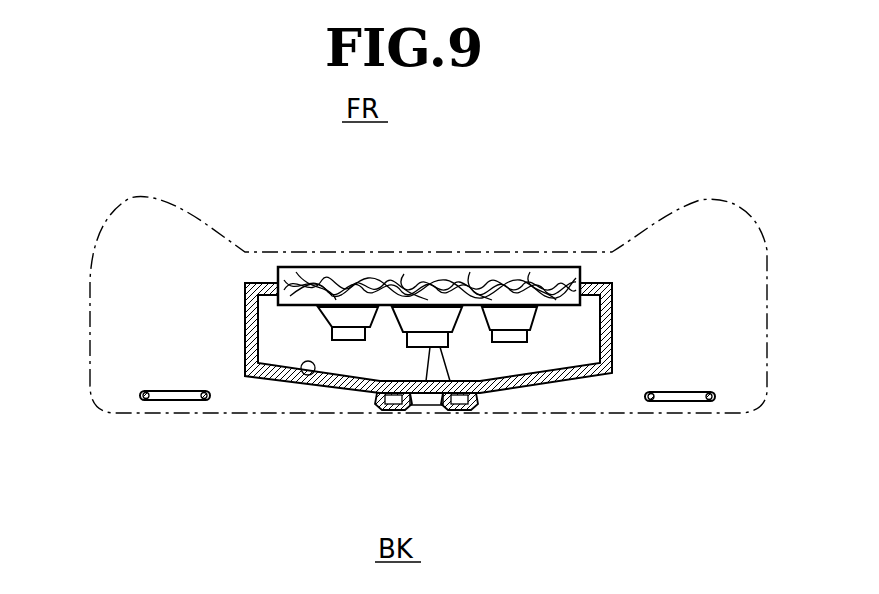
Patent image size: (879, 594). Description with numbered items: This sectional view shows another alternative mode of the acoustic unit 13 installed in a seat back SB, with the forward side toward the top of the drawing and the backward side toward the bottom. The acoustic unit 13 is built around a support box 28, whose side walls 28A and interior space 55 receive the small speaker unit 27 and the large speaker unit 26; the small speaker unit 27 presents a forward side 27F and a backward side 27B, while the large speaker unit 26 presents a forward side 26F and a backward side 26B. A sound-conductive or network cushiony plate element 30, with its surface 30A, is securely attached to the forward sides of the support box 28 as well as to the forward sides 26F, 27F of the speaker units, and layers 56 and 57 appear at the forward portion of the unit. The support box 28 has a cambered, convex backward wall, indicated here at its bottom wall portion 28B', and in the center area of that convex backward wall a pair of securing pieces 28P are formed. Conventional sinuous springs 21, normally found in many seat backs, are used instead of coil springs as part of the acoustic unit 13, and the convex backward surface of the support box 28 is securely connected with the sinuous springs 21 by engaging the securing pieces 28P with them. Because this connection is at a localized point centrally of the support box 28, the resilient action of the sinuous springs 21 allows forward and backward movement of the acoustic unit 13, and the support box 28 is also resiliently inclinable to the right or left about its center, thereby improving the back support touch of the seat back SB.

The seat back SB is at (118, 212).
The acoustic unit 13 is at (508, 228).
The adhesive / filler layer 56 is at (268, 283).
The network cushiony plate element 30 is at (429, 236).
The layer surface 30A is at (348, 276).
The forward side of the small speaker unit 27F is at (370, 307).
The forward side of the large speaker unit 26F is at (445, 307).
The sealing member 57 is at (558, 275).
The support box 28 is at (232, 302).
The small speaker unit 27 is at (318, 318).
The side wall of holder 28A is at (248, 349).
The inner space 55 is at (568, 350).
The sinuous springs 21 is at (178, 402).
The bottom wall portion 28B' is at (434, 424).
The rear face of element 27 27B is at (350, 340).
The securing pieces 28P is at (382, 410).
The large speaker unit 26 is at (427, 405).
The rear face of element 26 26B is at (458, 405).